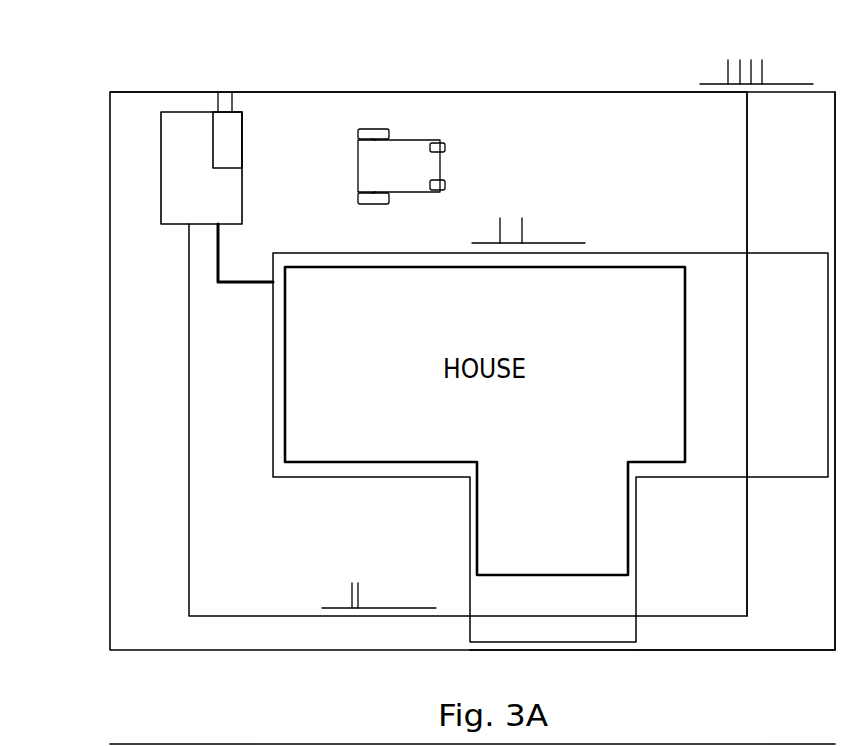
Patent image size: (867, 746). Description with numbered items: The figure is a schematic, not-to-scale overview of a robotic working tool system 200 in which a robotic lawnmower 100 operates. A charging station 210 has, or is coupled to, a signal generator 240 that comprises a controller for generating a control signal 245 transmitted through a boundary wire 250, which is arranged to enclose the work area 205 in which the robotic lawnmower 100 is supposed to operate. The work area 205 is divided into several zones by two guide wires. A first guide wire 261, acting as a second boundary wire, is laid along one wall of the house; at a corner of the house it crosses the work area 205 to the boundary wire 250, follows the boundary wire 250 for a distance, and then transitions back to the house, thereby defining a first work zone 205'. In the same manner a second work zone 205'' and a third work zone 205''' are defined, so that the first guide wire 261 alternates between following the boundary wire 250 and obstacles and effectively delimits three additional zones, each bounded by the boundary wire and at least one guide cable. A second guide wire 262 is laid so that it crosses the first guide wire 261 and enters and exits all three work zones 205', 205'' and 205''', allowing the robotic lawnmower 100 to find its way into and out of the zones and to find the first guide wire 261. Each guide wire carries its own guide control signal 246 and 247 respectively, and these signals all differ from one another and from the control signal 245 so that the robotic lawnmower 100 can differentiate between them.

The robotic lawnmower 100 is at (401, 166).
The robotic working tool system 200 is at (430, 377).
The work area 205 is at (428, 139).
The first work zone 205' is at (791, 371).
The second work zone 205'' is at (738, 659).
The third work zone 205''' is at (575, 669).
The charging station 210 is at (201, 168).
The signal generator 240 is at (228, 130).
The control signal 245 is at (756, 68).
The guide control signal 246 is at (379, 591).
The guide control signal 247 is at (528, 225).
The boundary wire 250 is at (677, 92).
The first guide wire 261 is at (217, 284).
The second guide wire 262 is at (264, 617).